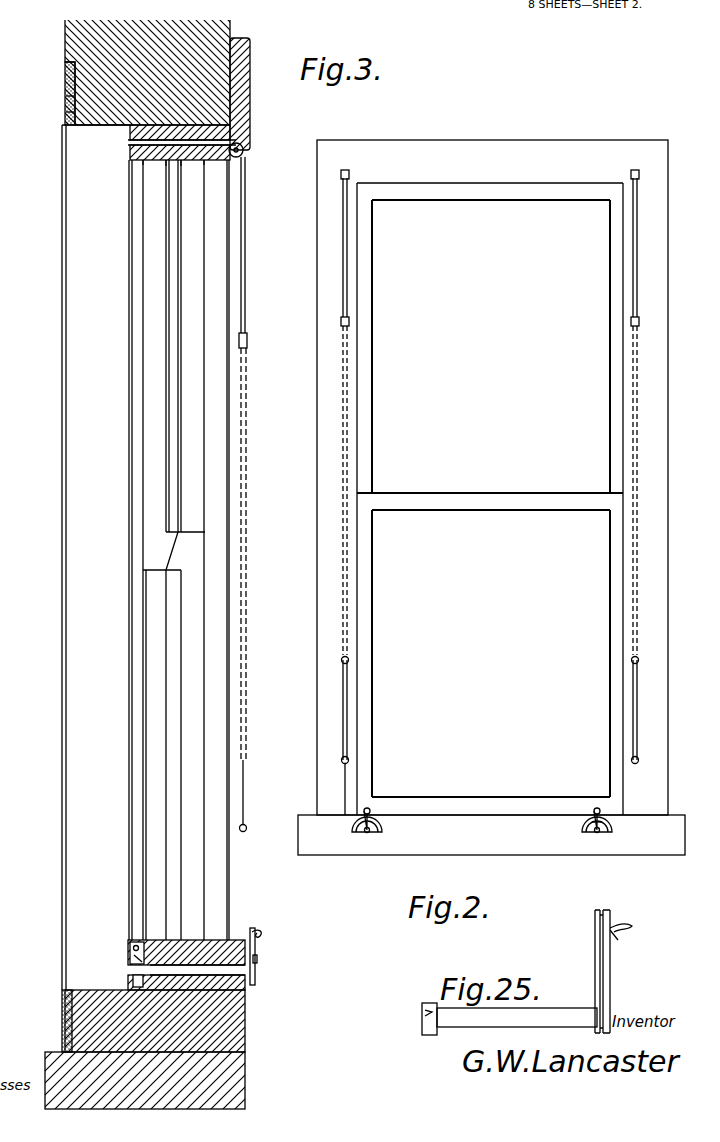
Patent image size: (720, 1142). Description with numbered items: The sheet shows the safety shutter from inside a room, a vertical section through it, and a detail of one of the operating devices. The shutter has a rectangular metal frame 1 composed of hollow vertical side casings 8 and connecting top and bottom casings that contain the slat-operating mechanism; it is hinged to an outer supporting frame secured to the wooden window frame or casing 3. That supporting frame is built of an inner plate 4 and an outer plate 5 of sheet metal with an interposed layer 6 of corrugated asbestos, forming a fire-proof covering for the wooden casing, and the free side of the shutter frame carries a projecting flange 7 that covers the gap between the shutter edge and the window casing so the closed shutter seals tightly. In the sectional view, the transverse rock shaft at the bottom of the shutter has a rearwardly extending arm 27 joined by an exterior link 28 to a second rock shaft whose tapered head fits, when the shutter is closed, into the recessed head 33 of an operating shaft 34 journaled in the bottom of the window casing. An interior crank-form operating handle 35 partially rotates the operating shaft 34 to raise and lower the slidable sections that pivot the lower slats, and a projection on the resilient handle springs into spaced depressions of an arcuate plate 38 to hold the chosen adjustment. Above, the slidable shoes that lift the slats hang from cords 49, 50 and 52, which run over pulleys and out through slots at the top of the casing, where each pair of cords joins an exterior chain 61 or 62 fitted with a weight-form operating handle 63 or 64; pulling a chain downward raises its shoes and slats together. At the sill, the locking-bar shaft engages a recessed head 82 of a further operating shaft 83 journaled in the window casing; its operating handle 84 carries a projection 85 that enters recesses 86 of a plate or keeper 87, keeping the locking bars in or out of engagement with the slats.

In FIG. 3, the frame 1 is at (80, 249).
In FIG. 3, the window frame or casing 3 is at (78, 53).
In FIG. 2, the window frame or casing 3 is at (438, 148).
In FIG. 3, the inner plate 4 is at (66, 80).
In FIG. 3, the outer plate 5 is at (66, 96).
In FIG. 3, the interposed layer 6 is at (66, 112).
In FIG. 3, the projecting flange 7 is at (62, 331).
In FIG. 3, the vertical side casing 8 is at (128, 141).
In FIG. 3, the rearwardly extending arm 27 is at (130, 948).
In FIG. 3, the exterior link 28 is at (180, 942).
In FIG. 3, the recessed head 33 is at (134, 988).
In FIG. 3, the operating shaft 34 is at (205, 985).
In FIG. 3, the operating handle 35 is at (262, 932).
In FIG. 3, the arcuate plate 38 is at (255, 958).
In FIG. 2, the cord 49 is at (342, 250).
In FIG. 3, the cord 50 is at (246, 297).
In FIG. 2, the cord 50 is at (345, 287).
In FIG. 2, the cord 52 is at (637, 212).
In FIG. 3, the exterior chain 61 is at (248, 492).
In FIG. 2, the exterior chain 61 is at (342, 490).
In FIG. 2, the exterior chain 62 is at (637, 503).
In FIG. 3, the operating handle 63 is at (248, 782).
In FIG. 2, the operating handle 63 is at (342, 705).
In FIG. 2, the operating handle 64 is at (637, 727).
In FIG. 25, the recessed head 82 is at (422, 1015).
In FIG. 25, the operating shaft 83 is at (468, 1027).
In FIG. 2, the operating handle 84 is at (594, 816).
In FIG. 25, the operating handle 84 is at (627, 942).
In FIG. 25, the projection 85 is at (596, 922).
In FIG. 2, the recesses or indentations 86 is at (597, 832).
In FIG. 25, the recesses or indentations 86 is at (596, 935).
In FIG. 2, the plate or keeper 87 is at (612, 828).
In FIG. 25, the plate or keeper 87 is at (602, 983).